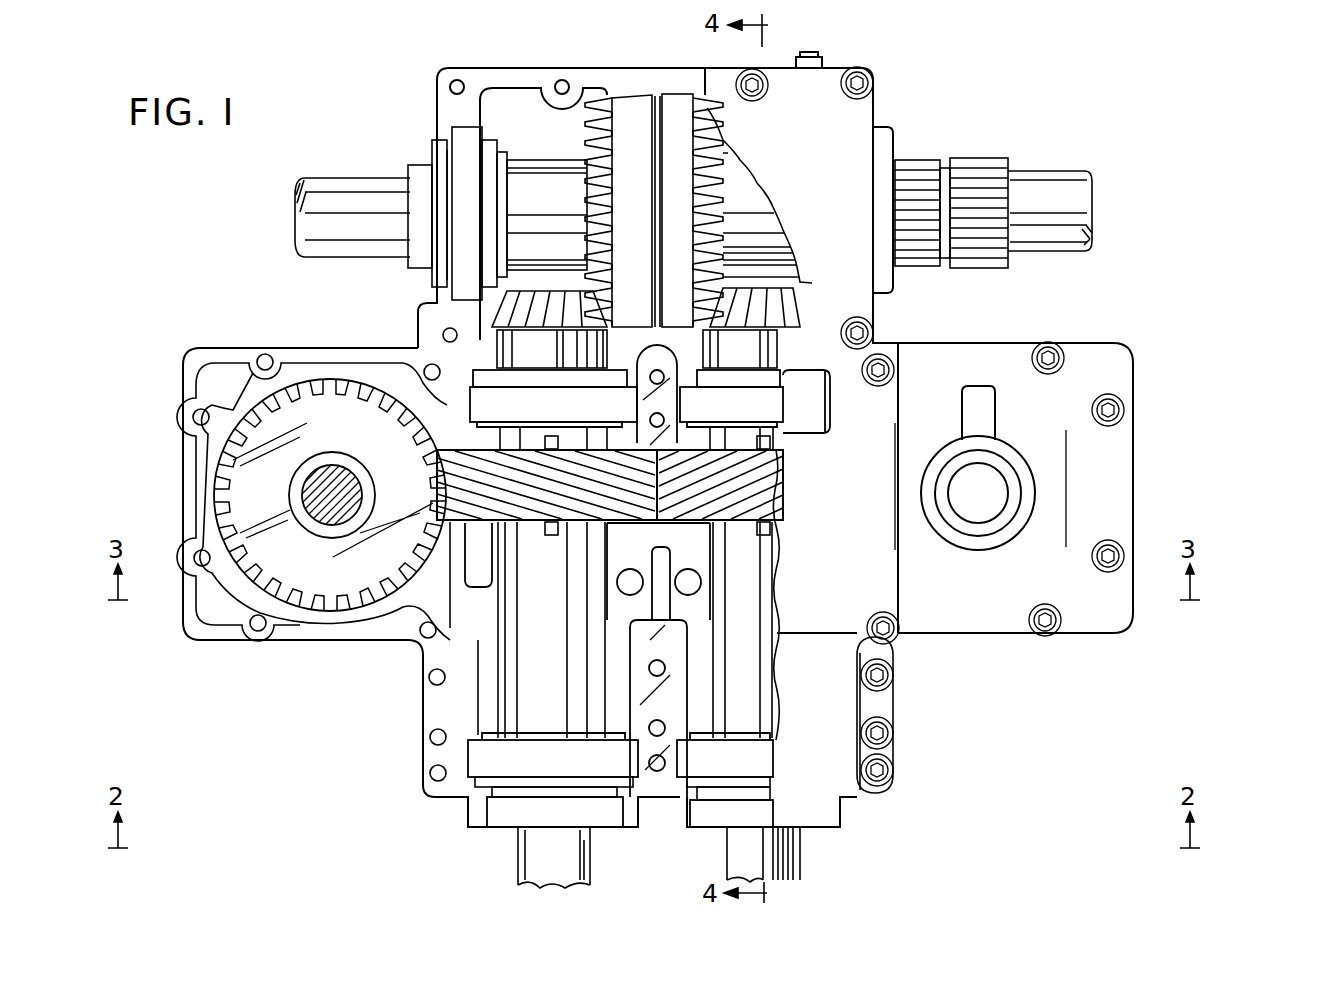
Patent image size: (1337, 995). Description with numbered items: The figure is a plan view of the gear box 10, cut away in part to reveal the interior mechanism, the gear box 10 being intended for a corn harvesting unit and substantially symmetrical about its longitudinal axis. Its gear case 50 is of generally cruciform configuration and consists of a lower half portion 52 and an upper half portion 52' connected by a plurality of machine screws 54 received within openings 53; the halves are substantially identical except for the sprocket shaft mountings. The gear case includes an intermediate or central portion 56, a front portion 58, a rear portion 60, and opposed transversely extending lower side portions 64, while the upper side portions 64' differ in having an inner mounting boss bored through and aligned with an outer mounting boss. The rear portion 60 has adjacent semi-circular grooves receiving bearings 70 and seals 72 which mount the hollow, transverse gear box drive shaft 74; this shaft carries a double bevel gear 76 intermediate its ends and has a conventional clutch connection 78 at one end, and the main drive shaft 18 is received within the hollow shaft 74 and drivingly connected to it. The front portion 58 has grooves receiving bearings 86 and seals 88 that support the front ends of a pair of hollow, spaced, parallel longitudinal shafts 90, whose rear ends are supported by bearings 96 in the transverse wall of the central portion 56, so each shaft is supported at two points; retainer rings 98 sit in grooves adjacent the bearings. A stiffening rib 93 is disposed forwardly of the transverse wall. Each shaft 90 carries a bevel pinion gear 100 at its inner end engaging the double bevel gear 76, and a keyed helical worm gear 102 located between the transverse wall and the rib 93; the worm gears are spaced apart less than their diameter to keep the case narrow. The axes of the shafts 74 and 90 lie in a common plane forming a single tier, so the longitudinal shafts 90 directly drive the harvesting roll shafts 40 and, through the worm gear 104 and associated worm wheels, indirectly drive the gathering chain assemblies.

The gear box 10 is at (1012, 297).
The main drive shaft 18 is at (1080, 165).
The harvesting roll shaft 40 is at (800, 862).
The gear case 50 is at (322, 640).
The gear case lower half portion 52 is at (1085, 486).
The gear case upper half portion 52' is at (1074, 468).
The openings 53 is at (258, 632).
The machine screws 54 is at (893, 688).
The intermediate or central portion 56 is at (443, 336).
The front portion 58 is at (896, 768).
The rear portion 60 is at (878, 104).
The lower side portion 64 is at (535, 561).
The upper side portion 64' is at (1027, 462).
The bearings 70 is at (465, 183).
The seals 72 is at (437, 152).
The gear box drive shaft 74 is at (540, 160).
The double bevel gear 76 is at (735, 140).
The clutch connection 78 is at (510, 195).
The bearings 86 is at (750, 753).
The seals 88 is at (495, 808).
The longitudinal shafts 90 is at (515, 645).
The stiffening rib 93 is at (640, 532).
The bearings 96 is at (760, 405).
The retainer rings 98 is at (698, 820).
The bevel pinion gear 100 is at (790, 284).
The helical worm gear 102 is at (740, 522).
The worm gear 104 is at (772, 532).